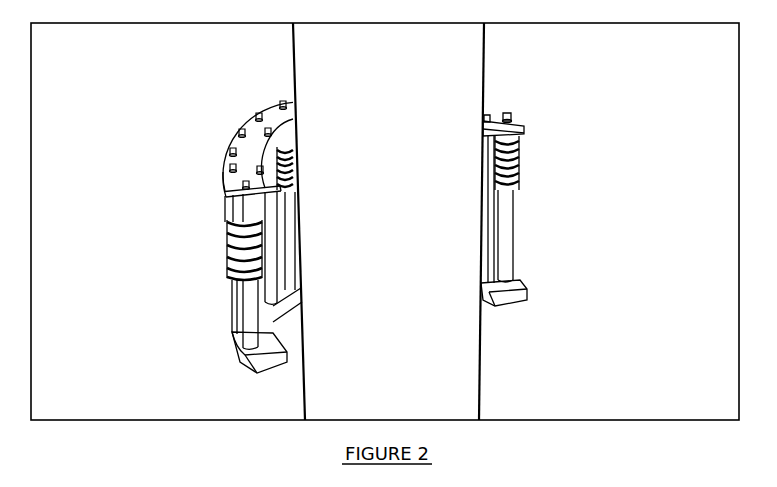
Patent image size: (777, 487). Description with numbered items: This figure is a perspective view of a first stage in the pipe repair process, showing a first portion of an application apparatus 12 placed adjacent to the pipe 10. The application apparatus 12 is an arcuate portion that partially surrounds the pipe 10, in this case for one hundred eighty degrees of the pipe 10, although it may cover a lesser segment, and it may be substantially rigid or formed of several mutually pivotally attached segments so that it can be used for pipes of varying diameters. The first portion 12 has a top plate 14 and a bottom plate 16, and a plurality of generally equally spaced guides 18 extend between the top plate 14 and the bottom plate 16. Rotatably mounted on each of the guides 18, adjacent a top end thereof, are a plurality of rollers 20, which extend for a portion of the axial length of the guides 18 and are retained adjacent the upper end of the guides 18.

The pipe 10 is at (444, 371).
The application apparatus 12 is at (518, 207).
The top plate 14 is at (489, 120).
The bottom plate 16 is at (523, 298).
The guides 18 is at (518, 235).
The rollers 20 is at (527, 158).